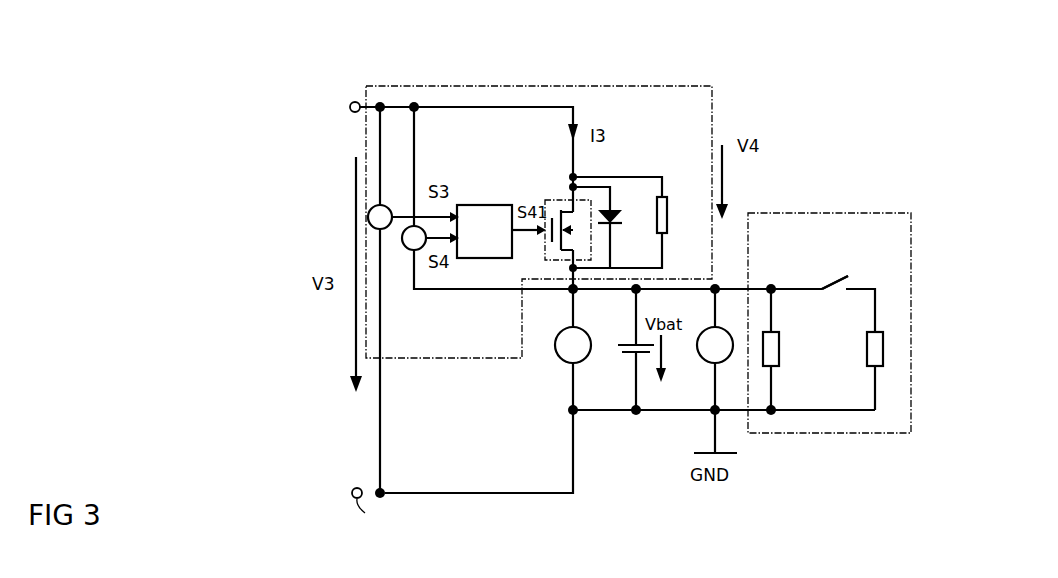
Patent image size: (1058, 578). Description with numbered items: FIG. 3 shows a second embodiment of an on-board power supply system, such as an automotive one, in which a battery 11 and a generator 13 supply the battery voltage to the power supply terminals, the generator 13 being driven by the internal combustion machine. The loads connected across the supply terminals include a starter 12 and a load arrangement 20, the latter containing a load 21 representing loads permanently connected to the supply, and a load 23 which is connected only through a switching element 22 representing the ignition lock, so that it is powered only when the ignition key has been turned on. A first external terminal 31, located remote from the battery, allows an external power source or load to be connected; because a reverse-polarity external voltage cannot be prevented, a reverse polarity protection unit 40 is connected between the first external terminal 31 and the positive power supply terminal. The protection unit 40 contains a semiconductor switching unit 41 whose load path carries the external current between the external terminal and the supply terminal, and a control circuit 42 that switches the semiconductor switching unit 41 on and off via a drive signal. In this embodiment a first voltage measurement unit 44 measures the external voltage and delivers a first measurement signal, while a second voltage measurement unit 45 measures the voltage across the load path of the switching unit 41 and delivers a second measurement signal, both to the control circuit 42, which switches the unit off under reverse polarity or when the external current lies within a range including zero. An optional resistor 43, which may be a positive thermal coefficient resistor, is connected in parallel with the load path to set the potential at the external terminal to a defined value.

The first external terminal 31 is at (352, 100).
The reverse polarity protection unit 40 is at (712, 112).
The semiconductor switching unit 41 is at (549, 200).
The control circuit 42 is at (496, 205).
The resistor 43 is at (668, 215).
The first voltage measurement unit 44 is at (385, 205).
The second voltage measurement unit 45 is at (408, 250).
The load arrangement 20 is at (828, 212).
The load 21 is at (779, 350).
The switching element 22 is at (838, 282).
The load 23 is at (866, 340).
The battery 11 is at (620, 336).
The starter 12 is at (557, 333).
The generator 13 is at (698, 328).